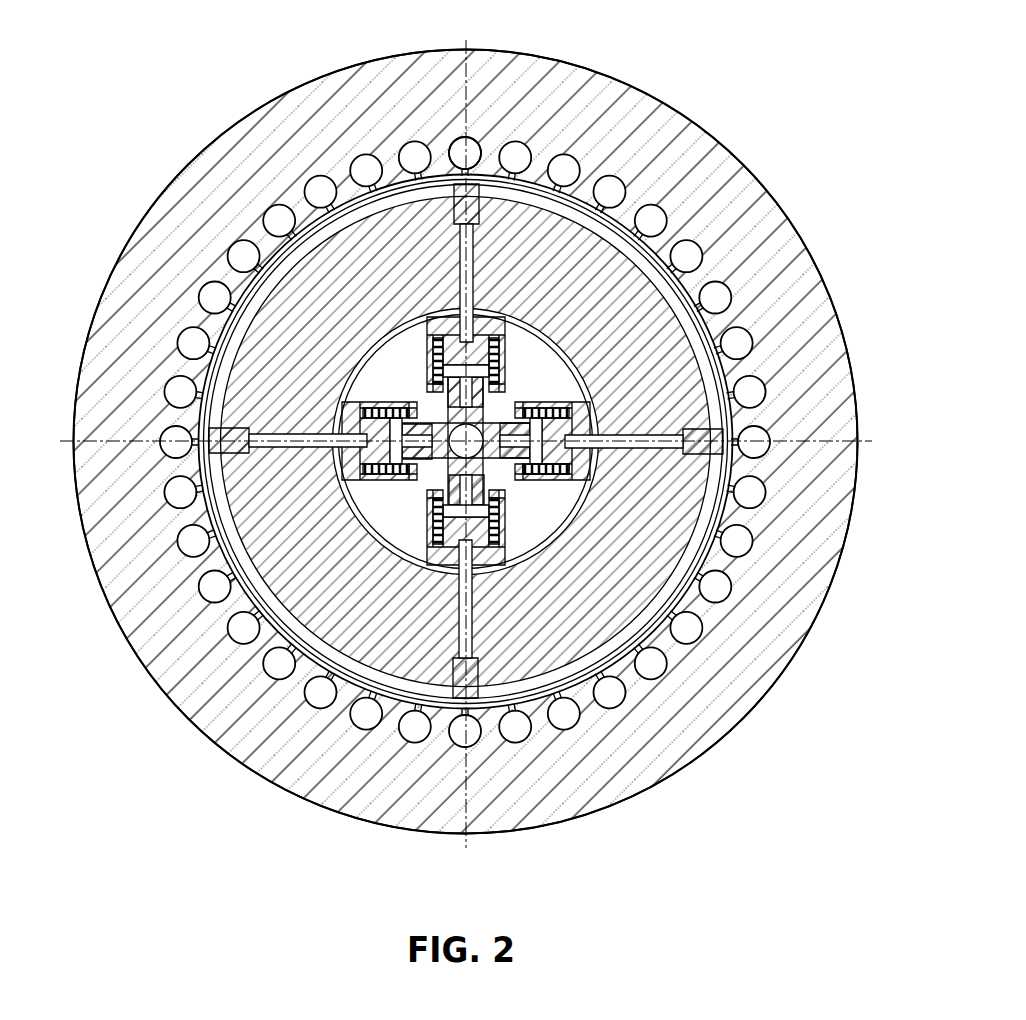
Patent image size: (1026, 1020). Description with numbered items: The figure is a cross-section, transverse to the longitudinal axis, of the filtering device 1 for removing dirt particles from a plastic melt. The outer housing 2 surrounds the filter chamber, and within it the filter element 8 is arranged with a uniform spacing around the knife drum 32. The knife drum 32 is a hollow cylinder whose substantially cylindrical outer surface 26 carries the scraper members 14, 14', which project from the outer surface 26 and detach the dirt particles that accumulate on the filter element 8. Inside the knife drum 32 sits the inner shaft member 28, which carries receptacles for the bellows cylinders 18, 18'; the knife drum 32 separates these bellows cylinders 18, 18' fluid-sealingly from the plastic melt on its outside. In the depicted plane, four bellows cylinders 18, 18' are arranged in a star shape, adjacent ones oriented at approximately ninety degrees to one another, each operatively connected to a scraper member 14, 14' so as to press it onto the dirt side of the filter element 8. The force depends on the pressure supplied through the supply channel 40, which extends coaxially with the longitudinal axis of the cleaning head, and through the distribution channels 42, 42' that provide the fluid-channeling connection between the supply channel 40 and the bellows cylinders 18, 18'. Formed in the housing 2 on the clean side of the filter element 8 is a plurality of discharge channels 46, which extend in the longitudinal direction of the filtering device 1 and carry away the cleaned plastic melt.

The filtering device 1 is at (217, 887).
The housing 2 is at (690, 742).
The filter element 8 is at (577, 197).
The scraper member 14 is at (455, 173).
The scraper member 14' is at (737, 417).
The bellows cylinder 18 is at (400, 260).
The bellows cylinder 18' is at (227, 486).
The outer surface 26 is at (617, 233).
The inner shaft member 28 is at (542, 342).
The knife drum 32 is at (523, 217).
The supply channel 40 is at (508, 408).
The distribution channel 42 is at (292, 301).
The distribution channel 42' is at (704, 488).
The discharge channels 46 is at (697, 248).